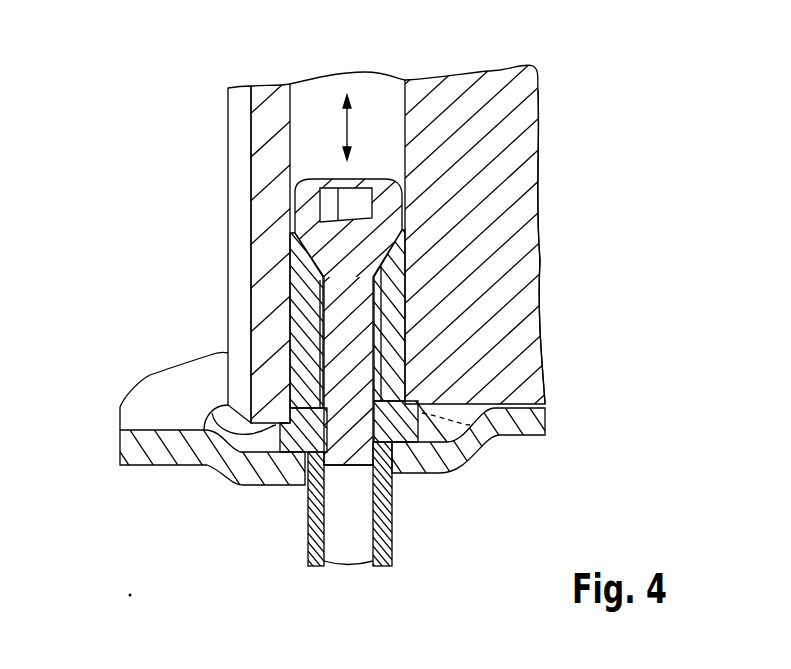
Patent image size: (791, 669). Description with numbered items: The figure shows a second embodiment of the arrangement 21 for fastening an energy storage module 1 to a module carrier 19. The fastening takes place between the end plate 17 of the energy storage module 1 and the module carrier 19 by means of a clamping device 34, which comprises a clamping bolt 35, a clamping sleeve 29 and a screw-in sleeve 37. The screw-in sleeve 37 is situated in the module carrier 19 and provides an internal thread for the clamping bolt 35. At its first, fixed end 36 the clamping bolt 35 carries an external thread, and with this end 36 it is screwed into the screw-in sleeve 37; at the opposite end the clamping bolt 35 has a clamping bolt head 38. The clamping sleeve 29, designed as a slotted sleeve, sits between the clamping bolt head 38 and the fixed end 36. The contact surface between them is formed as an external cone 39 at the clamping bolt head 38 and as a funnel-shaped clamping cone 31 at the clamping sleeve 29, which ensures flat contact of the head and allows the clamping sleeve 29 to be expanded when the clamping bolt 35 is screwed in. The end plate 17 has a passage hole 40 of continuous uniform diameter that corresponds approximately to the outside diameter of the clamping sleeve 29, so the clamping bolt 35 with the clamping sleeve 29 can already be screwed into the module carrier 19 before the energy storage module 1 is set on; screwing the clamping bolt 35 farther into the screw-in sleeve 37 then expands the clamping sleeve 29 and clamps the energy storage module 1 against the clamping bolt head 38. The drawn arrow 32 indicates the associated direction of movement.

The energy storage module 1 is at (584, 97).
The end plate 17 is at (527, 202).
The module carrier 19 is at (165, 453).
The arrangement 21 is at (557, 288).
The clamping sleeve 29 is at (303, 290).
The clamping cone 31 is at (300, 257).
The direction of movement 32 is at (344, 133).
The clamping device 34 is at (290, 545).
The clamping bolt 35 is at (344, 328).
The fixed end 36 is at (348, 453).
The screw-in sleeve 37 is at (310, 506).
The clamping bolt head 38 is at (305, 220).
The external cone 39 is at (298, 345).
The passage hole 40 is at (289, 162).